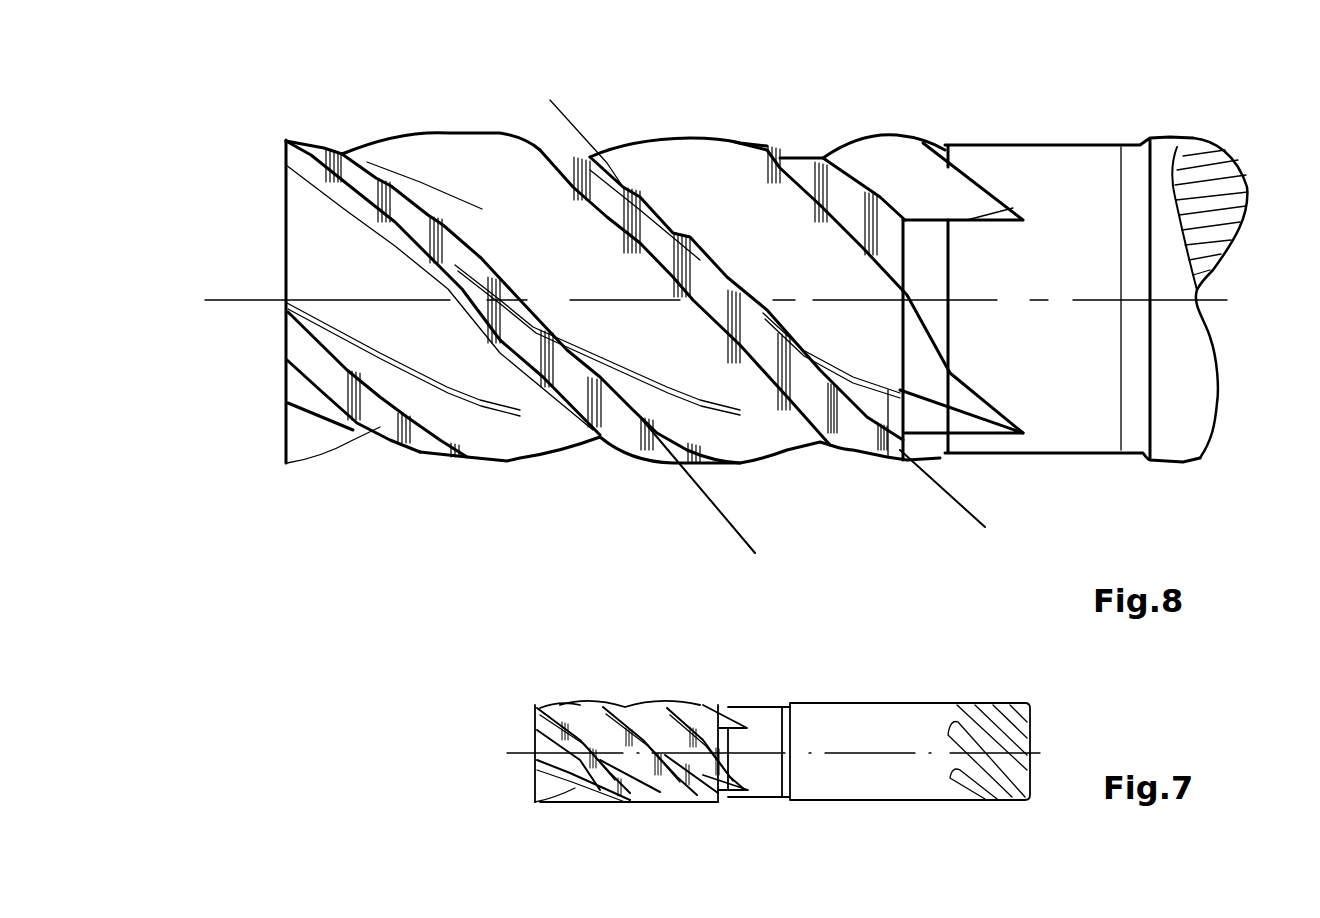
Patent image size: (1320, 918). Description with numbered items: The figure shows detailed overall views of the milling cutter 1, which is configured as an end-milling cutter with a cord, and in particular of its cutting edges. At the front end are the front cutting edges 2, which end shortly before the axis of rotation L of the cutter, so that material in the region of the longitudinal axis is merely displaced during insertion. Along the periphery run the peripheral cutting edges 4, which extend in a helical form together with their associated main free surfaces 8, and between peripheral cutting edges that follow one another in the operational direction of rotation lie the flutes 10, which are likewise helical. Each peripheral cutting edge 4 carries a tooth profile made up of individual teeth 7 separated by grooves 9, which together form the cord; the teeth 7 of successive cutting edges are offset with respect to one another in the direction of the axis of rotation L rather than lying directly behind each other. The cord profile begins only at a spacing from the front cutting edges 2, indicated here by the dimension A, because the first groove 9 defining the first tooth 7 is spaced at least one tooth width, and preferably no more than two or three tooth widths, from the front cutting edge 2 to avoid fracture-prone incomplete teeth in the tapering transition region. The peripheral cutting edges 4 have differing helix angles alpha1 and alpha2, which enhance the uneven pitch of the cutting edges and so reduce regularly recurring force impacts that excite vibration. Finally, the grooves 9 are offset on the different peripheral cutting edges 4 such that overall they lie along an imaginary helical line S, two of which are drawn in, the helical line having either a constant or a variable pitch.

In FIG. 8, the milling cutter 1 is at (803, 112).
In FIG. 7, the milling cutter 1 is at (731, 690).
In FIG. 8, the front cutting edges 2 is at (280, 233).
In FIG. 7, the front cutting edges 2 is at (535, 763).
In FIG. 8, the peripheral cutting edges 4 is at (416, 229).
In FIG. 8, the teeth 7 is at (382, 425).
In FIG. 7, the teeth 7 is at (563, 792).
In FIG. 8, the main free surfaces 8 is at (597, 433).
In FIG. 8, the grooves 9 is at (365, 435).
In FIG. 7, the grooves 9 is at (550, 715).
In FIG. 8, the flutes 10 is at (480, 195).
In FIG. 7, the flutes 10 is at (657, 718).
In FIG. 8, the imaginary helical line S is at (547, 253).
In FIG. 8, the axis of rotation L is at (215, 300).
In FIG. 7, the axis of rotation L is at (1030, 752).
In FIG. 8, the axial distance A is at (348, 523).
In FIG. 8, the helix angle alpha1 is at (934, 475).
In FIG. 8, the helix angle alpha2 is at (696, 484).